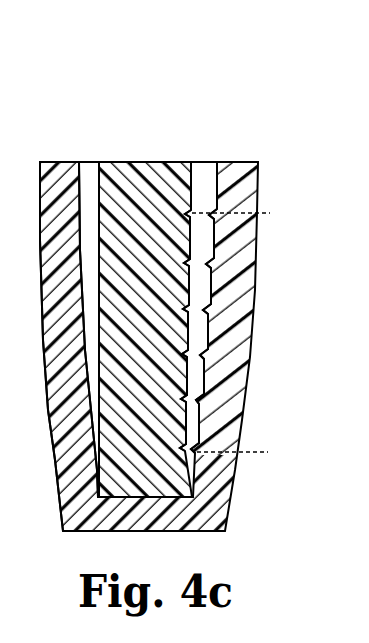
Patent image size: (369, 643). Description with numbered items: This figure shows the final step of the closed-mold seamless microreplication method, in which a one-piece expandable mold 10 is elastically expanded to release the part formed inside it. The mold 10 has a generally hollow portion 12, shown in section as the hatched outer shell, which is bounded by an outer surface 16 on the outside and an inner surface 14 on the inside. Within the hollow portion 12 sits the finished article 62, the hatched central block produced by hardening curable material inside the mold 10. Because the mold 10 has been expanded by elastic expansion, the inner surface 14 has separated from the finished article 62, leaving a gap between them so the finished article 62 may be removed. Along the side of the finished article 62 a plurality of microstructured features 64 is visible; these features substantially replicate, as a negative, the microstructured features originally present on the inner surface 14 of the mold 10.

The one-piece expandable mold 10 is at (160, 302).
The hollow portion 12 is at (61, 188).
The inner surface 14 is at (87, 169).
The outer surface 16 is at (40, 310).
The finished article 62 is at (168, 179).
The microstructured features 64 is at (268, 213).